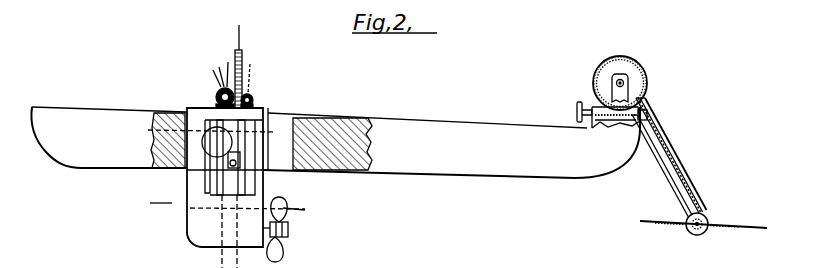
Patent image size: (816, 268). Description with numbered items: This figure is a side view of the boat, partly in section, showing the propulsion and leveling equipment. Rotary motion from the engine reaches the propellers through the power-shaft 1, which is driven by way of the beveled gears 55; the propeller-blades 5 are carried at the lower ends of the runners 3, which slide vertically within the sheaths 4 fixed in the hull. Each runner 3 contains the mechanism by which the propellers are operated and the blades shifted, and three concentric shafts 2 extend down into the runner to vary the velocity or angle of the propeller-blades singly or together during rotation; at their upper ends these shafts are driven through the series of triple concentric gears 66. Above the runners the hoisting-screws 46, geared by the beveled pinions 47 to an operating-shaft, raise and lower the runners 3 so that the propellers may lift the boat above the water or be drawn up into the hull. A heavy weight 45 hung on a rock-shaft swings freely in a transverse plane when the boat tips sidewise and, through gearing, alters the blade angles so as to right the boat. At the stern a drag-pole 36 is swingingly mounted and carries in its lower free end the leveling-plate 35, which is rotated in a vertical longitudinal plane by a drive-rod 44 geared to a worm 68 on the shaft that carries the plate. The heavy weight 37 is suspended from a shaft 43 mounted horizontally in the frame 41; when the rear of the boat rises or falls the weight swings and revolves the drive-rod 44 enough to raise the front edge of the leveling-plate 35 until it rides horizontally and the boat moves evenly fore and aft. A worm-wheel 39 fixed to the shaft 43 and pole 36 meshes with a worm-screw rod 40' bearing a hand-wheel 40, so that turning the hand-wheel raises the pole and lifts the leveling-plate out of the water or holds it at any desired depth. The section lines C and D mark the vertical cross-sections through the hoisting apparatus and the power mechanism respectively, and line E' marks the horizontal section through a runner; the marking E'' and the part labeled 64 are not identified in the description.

The power-shaft 1 is at (268, 157).
The concentric shafts 2 is at (237, 180).
The runners 3 is at (247, 214).
The sheaths 4 is at (184, 108).
The propeller-blades 5 is at (281, 252).
The leveling-plate 35 is at (728, 222).
The drag-pole 36 is at (658, 150).
The heavy weight 37 is at (647, 118).
The worm-wheel 39 is at (637, 85).
The hand-wheel 40 is at (568, 115).
The worm-screw rod 40' is at (616, 127).
The frame 41 is at (597, 88).
The shaft 43 is at (626, 78).
The drive-rod 44 is at (703, 144).
The heavy weight 45 is at (152, 147).
The hoisting-screws 46 is at (243, 53).
The beveled pinions 47 is at (248, 162).
The beveled gears 55 is at (252, 97).
The casing bottom 64 is at (182, 198).
The triple concentric gears 66 is at (218, 93).
The worm 68 is at (703, 233).
The section line C C is at (237, 30).
The section line D D is at (252, 72).
The section line E' E' is at (206, 96).
The section line E'' is at (220, 206).